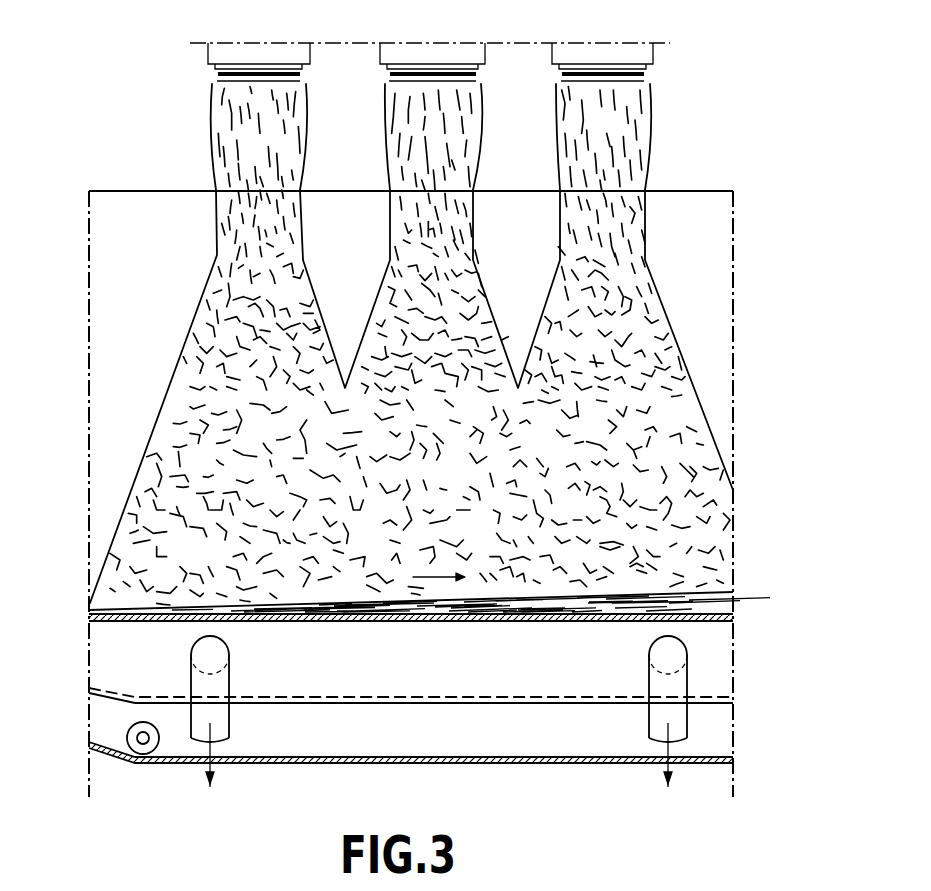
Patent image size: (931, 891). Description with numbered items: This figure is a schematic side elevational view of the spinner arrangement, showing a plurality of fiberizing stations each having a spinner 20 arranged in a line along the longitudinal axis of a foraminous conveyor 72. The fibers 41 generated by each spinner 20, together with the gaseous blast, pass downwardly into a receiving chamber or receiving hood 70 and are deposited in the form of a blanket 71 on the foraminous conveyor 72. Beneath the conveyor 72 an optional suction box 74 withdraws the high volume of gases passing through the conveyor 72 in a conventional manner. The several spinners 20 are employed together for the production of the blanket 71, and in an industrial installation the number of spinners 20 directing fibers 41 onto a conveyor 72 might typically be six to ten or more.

The spinner 20 is at (384, 78).
The fibers 41 is at (388, 133).
The receiving hood 70 is at (688, 223).
The blanket 71 is at (733, 600).
The foraminous conveyor 72 is at (540, 623).
The suction box 74 is at (708, 652).